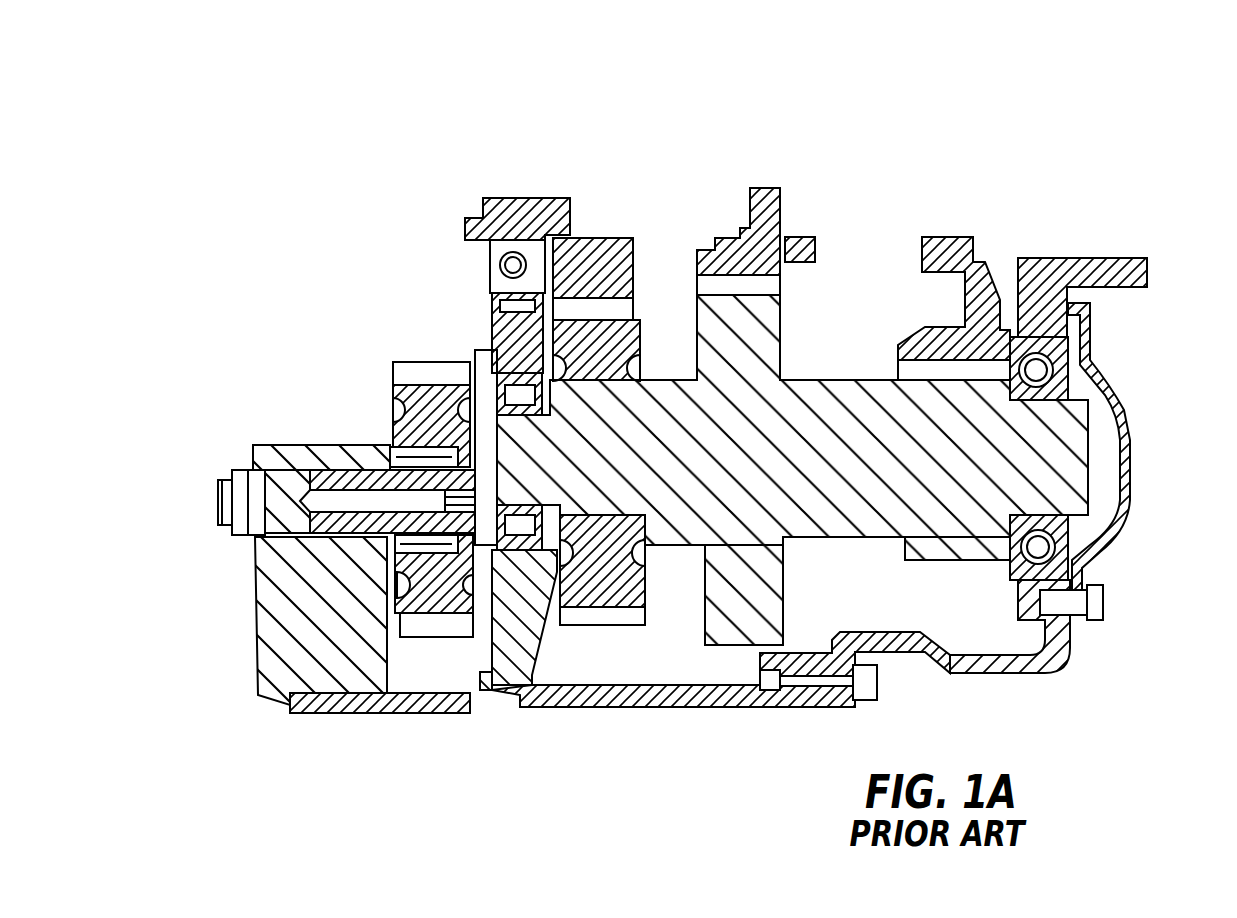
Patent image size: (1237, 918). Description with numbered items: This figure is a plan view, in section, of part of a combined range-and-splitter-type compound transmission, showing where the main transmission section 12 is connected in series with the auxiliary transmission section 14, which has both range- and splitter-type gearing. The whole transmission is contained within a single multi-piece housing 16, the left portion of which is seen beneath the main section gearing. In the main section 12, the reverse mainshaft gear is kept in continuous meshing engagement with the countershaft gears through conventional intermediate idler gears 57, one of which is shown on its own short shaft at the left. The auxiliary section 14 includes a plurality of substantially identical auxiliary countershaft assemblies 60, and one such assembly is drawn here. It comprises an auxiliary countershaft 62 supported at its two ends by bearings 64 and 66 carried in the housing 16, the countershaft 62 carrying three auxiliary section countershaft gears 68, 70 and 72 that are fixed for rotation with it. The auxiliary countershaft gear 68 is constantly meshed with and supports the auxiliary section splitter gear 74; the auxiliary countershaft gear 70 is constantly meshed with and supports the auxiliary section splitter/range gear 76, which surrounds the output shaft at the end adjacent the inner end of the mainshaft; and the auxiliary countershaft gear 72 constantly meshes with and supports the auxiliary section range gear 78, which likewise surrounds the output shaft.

The main transmission section 12 is at (338, 72).
The auxiliary transmission section 14 is at (1178, 262).
The housing 16 is at (276, 631).
The intermediate idler gears 57 is at (447, 603).
The auxiliary countershaft assemblies 60 is at (830, 275).
The auxiliary countershaft 62 is at (852, 525).
The bearing 64 is at (490, 345).
The bearing 66 is at (1075, 360).
The auxiliary section countershaft gear 68 is at (604, 590).
The auxiliary section countershaft gear 70 is at (760, 585).
The auxiliary section countershaft gear 72 is at (953, 547).
The auxiliary section splitter gear 74 is at (625, 268).
The auxiliary section splitter/range gear 76 is at (712, 262).
The auxiliary section range gear 78 is at (982, 262).